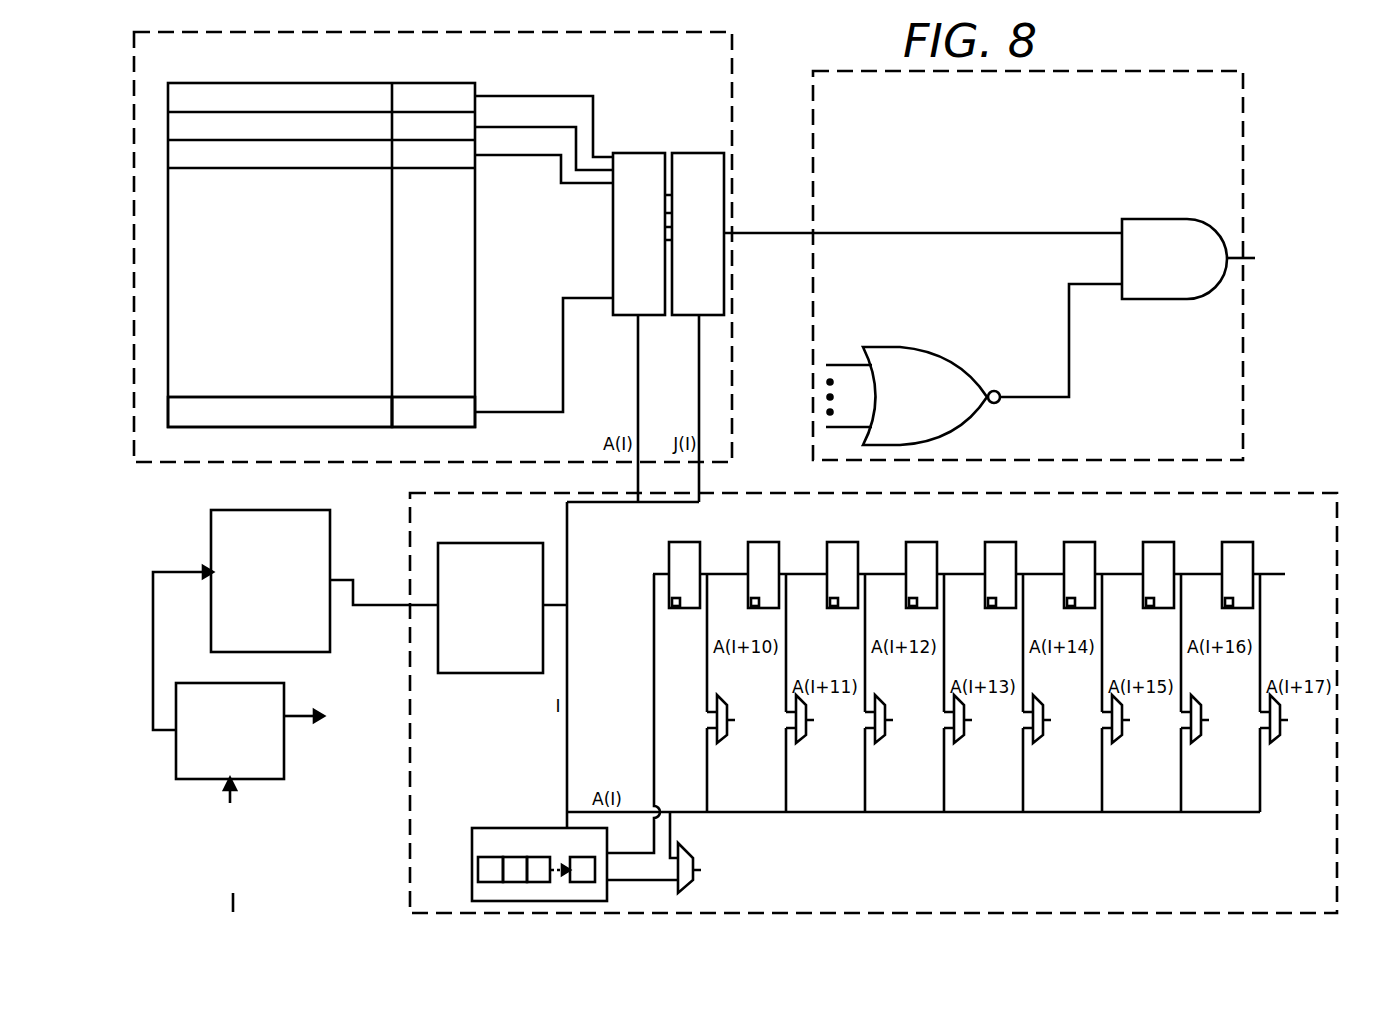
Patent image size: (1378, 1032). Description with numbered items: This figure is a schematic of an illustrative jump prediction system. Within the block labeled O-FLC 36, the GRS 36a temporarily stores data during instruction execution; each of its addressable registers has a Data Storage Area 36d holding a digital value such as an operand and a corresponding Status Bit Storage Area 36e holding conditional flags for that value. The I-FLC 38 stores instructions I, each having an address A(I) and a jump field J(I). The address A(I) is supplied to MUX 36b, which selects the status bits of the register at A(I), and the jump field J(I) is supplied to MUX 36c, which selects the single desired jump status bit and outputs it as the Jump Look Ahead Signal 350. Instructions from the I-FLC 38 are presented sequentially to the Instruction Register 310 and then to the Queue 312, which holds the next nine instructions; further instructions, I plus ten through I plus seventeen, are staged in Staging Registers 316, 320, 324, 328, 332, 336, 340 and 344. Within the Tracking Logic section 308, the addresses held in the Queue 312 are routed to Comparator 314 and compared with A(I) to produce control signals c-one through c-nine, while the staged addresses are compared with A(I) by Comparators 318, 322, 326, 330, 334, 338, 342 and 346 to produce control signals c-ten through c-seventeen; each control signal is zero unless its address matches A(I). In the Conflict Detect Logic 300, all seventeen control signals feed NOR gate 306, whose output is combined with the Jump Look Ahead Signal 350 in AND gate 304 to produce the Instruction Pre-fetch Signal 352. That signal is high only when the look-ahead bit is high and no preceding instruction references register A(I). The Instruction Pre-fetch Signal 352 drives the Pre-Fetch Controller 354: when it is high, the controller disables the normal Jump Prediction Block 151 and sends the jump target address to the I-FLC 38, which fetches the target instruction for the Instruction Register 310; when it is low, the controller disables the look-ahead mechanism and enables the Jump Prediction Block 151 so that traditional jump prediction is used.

The O-FLC 36 is at (433, 247).
The GRS 36a is at (340, 82).
The MUX 36b is at (638, 151).
The MUX 36c is at (700, 151).
The Data Storage Area 36d is at (182, 412).
The Status Bit Storage Area 36e is at (476, 412).
The Conflict Detect Logic 300 is at (1028, 265).
The AND gate 304 is at (1174, 259).
The NOR gate 306 is at (913, 399).
The Tracking Logic section 308 is at (873, 703).
The Instruction Register 310 is at (490, 608).
The Queue 312 is at (612, 884).
The Comparator 314 is at (690, 893).
The Staging Register 316 is at (672, 545).
The Comparator 318 is at (720, 742).
The Staging Register 320 is at (751, 545).
The Comparator 322 is at (799, 742).
The Staging Register 324 is at (830, 545).
The Comparator 326 is at (878, 742).
The Staging Register 328 is at (909, 545).
The Comparator 330 is at (957, 742).
The Staging Register 332 is at (988, 545).
The Comparator 334 is at (1036, 742).
The Staging Register 336 is at (1067, 545).
The Comparator 338 is at (1115, 742).
The Staging Register 340 is at (1146, 546).
The Comparator 342 is at (1194, 742).
The Staging Register 344 is at (1225, 545).
The Comparator 346 is at (1273, 742).
The I-FLC 38 is at (270, 581).
The Pre-Fetch Controller 354 is at (230, 731).
The Jump Look Ahead Signal 350 is at (772, 236).
The Instruction Pre-fetch Signal 352 is at (758, 585).
The Jump Prediction Block 151 is at (334, 787).